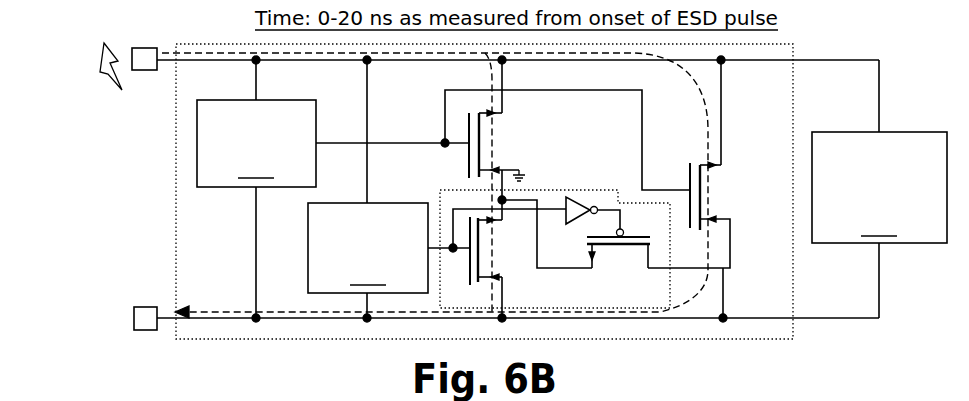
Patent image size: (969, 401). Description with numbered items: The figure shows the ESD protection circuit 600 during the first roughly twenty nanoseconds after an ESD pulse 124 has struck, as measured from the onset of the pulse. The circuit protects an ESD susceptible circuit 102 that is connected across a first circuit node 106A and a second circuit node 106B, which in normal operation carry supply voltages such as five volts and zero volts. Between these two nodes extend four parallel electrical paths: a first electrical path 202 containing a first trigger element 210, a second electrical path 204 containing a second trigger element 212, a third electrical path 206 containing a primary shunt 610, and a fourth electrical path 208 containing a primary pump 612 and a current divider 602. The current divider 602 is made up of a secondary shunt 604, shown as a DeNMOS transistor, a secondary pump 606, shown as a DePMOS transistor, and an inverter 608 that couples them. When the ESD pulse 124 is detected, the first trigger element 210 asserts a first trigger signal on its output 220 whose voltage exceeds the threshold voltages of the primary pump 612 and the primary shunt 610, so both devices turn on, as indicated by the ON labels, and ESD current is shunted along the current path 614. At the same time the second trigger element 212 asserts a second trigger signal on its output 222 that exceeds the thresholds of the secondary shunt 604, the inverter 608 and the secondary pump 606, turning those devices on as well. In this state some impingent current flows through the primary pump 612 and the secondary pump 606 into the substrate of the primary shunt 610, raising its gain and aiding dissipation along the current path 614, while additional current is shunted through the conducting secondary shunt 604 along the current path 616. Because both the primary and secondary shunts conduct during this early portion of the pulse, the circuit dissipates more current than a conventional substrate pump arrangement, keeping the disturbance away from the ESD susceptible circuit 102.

The first circuit node 106A is at (147, 55).
The second circuit node 106B is at (147, 315).
The ESD pulse 124 is at (104, 78).
The ESD protection circuit 600 is at (175, 195).
The first electrical path 202 is at (265, 80).
The second electrical path 204 is at (374, 80).
The fourth electrical path 208 is at (509, 80).
The third electrical path 206 is at (729, 80).
The first trigger element 210 is at (256, 143).
The second trigger element 212 is at (368, 248).
The first output 220 is at (317, 134).
The second output 222 is at (428, 253).
The primary pump 612 is at (509, 126).
The current divider 602 is at (553, 189).
The inverter 608 is at (577, 198).
The secondary shunt 604 is at (511, 274).
The secondary pump 606 is at (626, 284).
The primary shunt 610 is at (728, 178).
The current path 616 is at (493, 322).
The current path 614 is at (683, 322).
The ESD susceptible circuit 102 is at (879, 187).